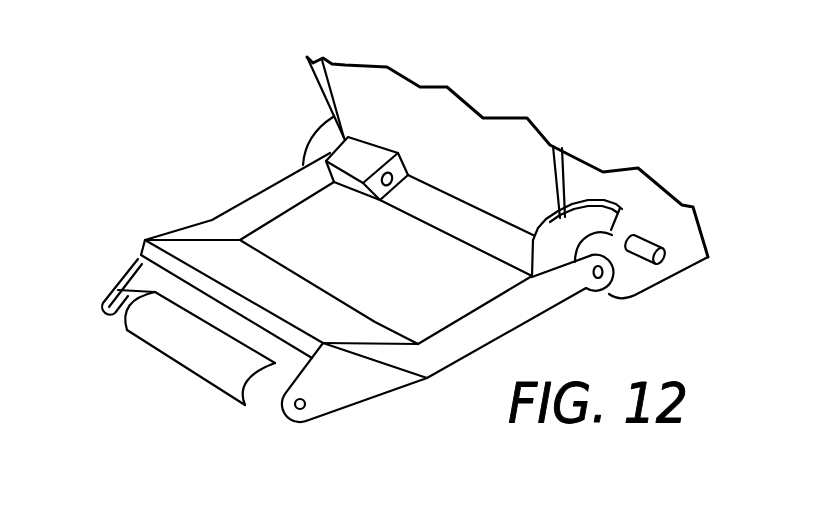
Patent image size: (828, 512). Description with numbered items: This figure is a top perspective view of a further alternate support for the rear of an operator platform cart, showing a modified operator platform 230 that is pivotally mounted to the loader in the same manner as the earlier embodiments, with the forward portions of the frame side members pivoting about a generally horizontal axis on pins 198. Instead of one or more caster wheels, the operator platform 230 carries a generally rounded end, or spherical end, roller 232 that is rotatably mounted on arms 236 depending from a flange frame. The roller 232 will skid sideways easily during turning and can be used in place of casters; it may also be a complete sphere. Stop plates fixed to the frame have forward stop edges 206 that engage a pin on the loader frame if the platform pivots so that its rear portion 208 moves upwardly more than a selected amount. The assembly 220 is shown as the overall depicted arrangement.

The pins 198 is at (398, 155).
The forward stop edges 206 is at (618, 222).
The rear portion 208 is at (658, 240).
The tray assembly 220 is at (283, 232).
The modified operator platform 230 is at (282, 290).
The roller 232 is at (197, 350).
The arms 236 is at (138, 277).